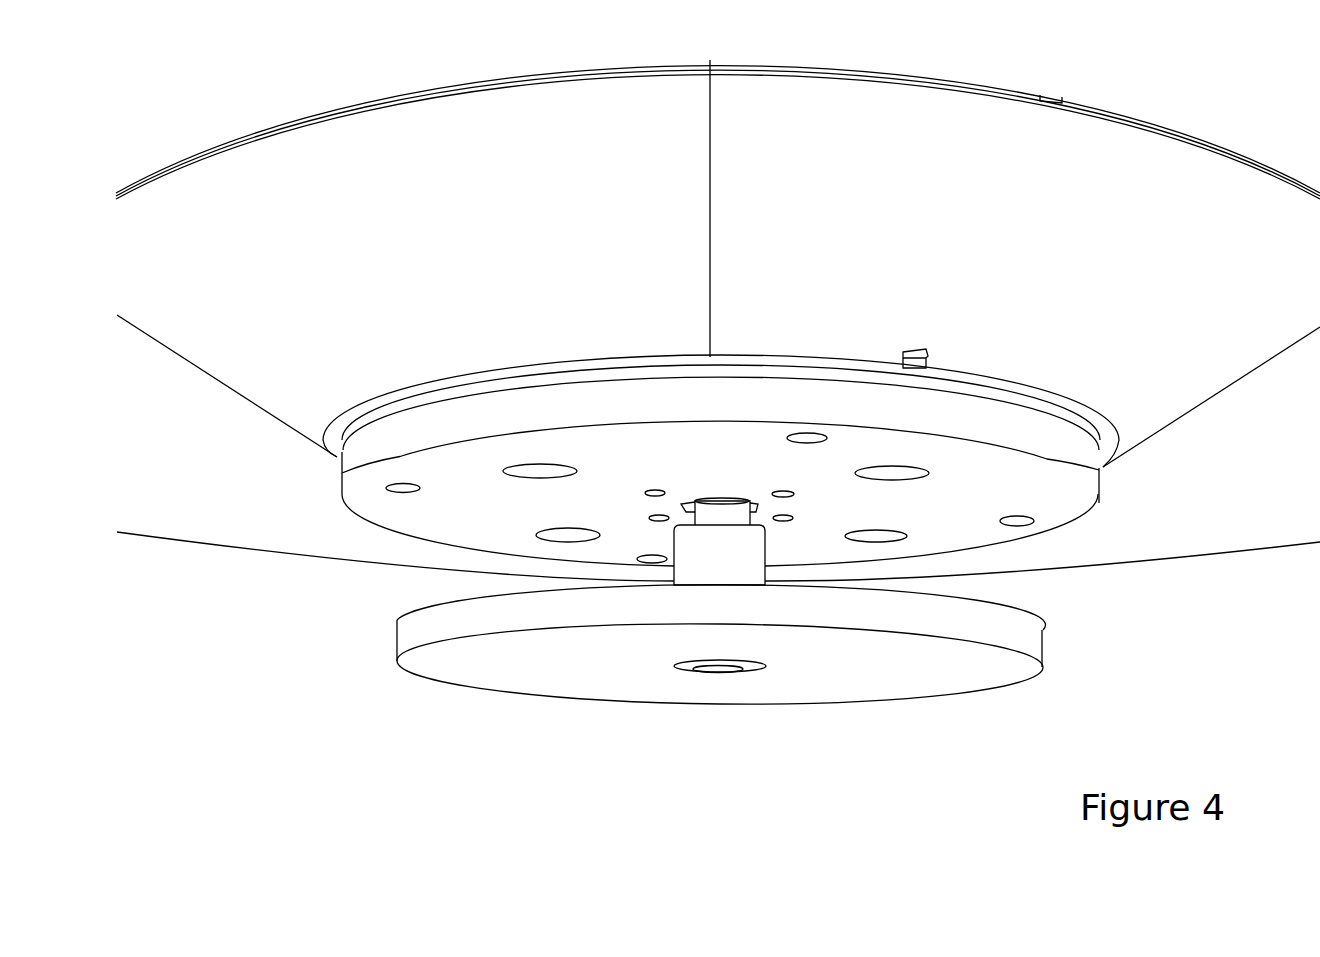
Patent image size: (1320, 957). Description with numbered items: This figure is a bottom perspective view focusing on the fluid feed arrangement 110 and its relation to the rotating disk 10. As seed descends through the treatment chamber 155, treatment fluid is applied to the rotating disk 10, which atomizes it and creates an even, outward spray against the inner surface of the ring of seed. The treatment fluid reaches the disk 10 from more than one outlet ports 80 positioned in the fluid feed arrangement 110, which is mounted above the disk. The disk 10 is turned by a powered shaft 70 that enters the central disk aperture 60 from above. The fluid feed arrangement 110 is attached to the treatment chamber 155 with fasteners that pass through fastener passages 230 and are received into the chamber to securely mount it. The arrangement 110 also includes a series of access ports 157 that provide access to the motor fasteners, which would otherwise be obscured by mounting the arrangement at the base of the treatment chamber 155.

The rotating disk 10 is at (397, 670).
The central disk aperture 60 is at (686, 668).
The powered shaft 70 is at (716, 670).
The outlet ports 80 is at (784, 489).
The fluid feed arrangement 110 is at (1105, 489).
The treatment chamber 155 is at (272, 116).
The access ports 157 is at (536, 524).
The fastener passages 230 is at (827, 437).